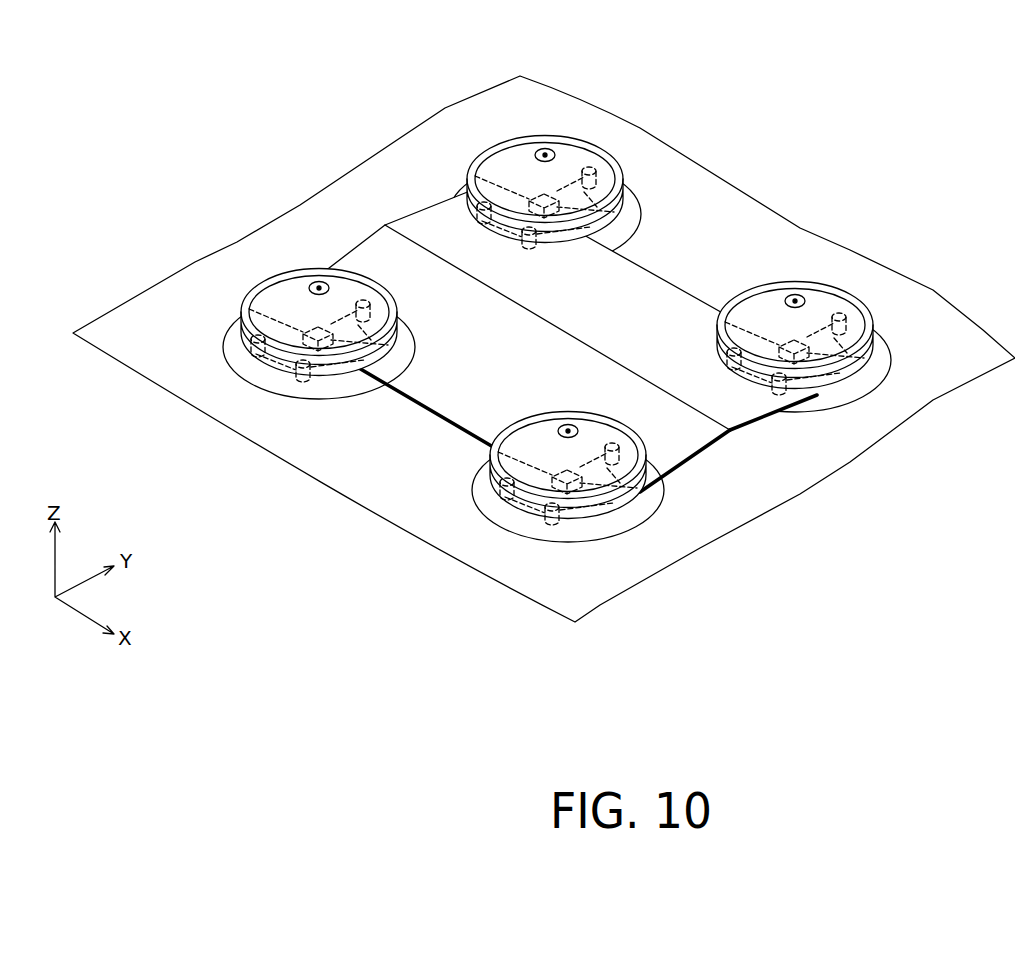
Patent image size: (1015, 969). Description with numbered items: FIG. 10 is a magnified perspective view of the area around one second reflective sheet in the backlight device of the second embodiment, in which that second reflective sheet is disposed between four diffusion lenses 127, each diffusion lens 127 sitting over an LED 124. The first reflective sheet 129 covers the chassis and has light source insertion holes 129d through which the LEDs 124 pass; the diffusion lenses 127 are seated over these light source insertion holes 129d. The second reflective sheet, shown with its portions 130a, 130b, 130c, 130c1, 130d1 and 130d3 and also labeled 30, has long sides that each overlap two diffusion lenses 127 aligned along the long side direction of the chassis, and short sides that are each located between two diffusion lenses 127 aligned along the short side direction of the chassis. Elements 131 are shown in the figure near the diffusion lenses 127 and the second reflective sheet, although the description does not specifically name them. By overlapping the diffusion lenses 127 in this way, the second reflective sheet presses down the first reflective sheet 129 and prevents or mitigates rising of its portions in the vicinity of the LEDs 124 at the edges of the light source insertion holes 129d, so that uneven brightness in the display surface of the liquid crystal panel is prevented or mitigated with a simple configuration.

The LED 124 is at (549, 195).
The diffusion lens 127 is at (586, 157).
The first reflective sheet 129 is at (712, 517).
The light source insertion hole 129d is at (498, 518).
The top plate portion of bracket 130a is at (616, 278).
The bracket 30 is at (667, 323).
The front wall portion of bracket 130b is at (605, 352).
The flange of bracket 130c is at (440, 415).
The rear flange of bracket 130c1 is at (707, 300).
The first mounting tab 130d1 is at (536, 218).
The second mounting tab 130d3 is at (262, 350).
The bolt 131 is at (732, 372).